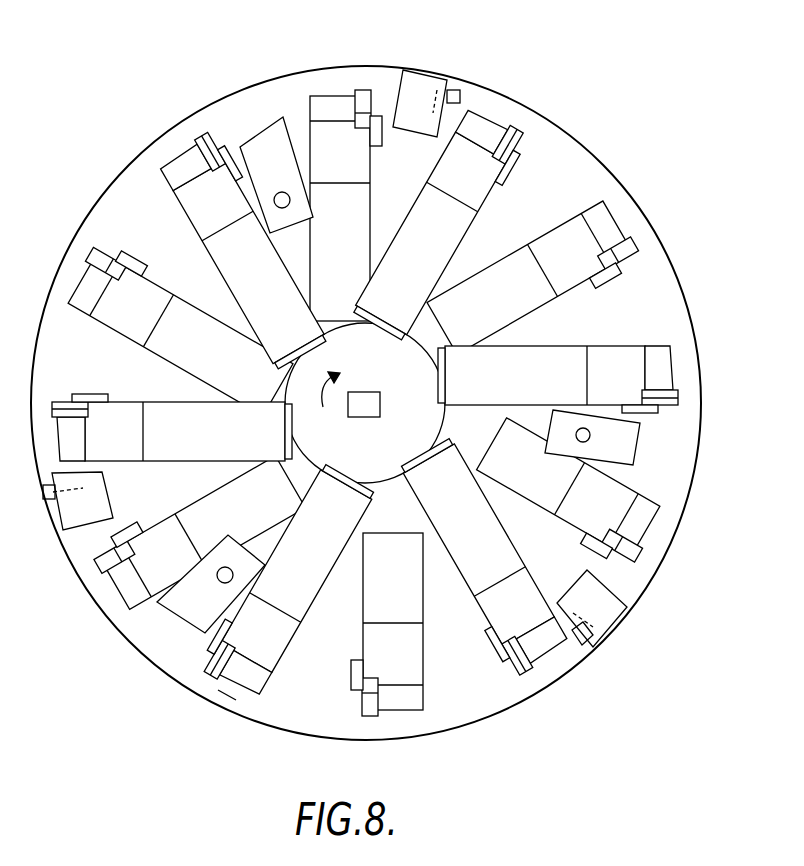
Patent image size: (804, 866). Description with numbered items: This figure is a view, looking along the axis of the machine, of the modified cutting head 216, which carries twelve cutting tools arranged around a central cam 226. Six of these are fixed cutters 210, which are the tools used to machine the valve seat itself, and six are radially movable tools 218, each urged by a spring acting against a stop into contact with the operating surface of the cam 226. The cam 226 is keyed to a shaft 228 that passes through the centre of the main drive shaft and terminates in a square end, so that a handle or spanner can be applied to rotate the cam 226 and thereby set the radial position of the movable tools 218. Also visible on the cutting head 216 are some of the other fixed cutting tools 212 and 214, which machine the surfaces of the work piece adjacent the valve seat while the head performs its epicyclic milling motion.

The fixed cutting tools 210 is at (340, 95).
The cutting tools 212 is at (86, 548).
The cutting tools 214 is at (263, 155).
The cutting head 216 is at (230, 690).
The radially movable tools 218 is at (172, 170).
The cam 226 is at (393, 370).
The shaft 228 is at (372, 407).